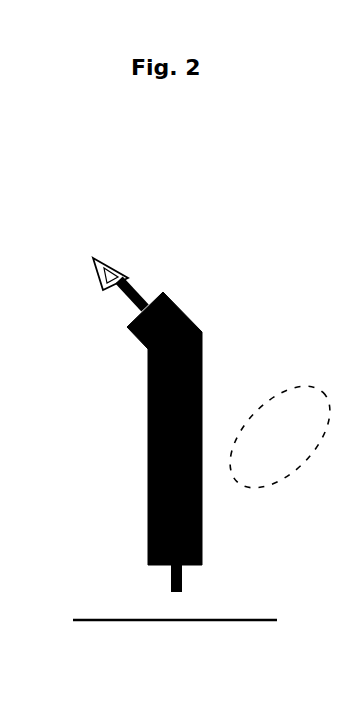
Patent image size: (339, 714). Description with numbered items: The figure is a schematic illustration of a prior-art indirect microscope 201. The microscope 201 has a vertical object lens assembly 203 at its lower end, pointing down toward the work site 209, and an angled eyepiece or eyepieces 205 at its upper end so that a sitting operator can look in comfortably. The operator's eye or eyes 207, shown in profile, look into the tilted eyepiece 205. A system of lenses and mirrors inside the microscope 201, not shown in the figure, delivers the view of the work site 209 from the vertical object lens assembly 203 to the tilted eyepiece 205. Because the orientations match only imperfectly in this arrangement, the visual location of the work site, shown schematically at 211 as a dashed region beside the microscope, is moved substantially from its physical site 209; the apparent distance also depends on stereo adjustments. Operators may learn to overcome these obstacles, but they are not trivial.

The indirect microscope 201 is at (146, 398).
The vertical object lens assembly 203 is at (188, 587).
The angled eyepiece 205 is at (128, 279).
The operator's eye 207 is at (88, 262).
The work site 209 is at (168, 619).
The visual location of the work site 211 is at (280, 410).